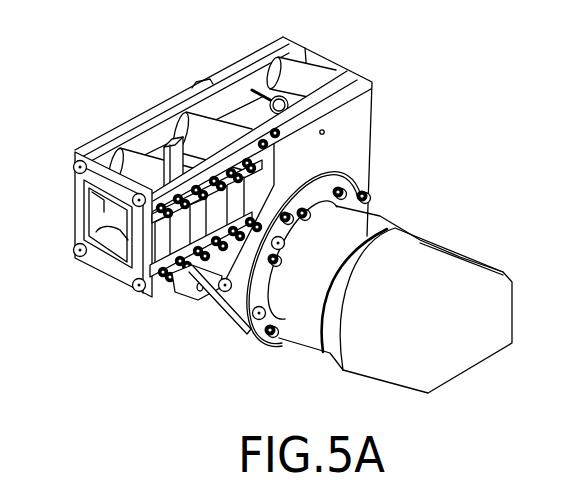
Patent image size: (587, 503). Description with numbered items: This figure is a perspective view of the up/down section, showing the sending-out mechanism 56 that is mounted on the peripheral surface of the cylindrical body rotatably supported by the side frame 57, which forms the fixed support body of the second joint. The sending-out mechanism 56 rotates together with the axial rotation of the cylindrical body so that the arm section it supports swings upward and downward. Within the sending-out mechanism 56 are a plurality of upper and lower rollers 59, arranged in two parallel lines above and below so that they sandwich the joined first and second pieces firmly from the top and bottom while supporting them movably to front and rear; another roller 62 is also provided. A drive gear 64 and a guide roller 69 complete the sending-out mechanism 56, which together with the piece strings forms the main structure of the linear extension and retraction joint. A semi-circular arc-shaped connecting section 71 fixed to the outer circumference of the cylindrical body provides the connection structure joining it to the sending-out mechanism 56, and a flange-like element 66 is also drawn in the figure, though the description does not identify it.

The sending-out mechanism 56 is at (388, 112).
The side frame 57 is at (456, 248).
The roller 59 is at (140, 147).
The roller 62 is at (137, 270).
The drive gear 64 is at (265, 97).
The flange 66 is at (378, 214).
The guide roller 69 is at (312, 62).
The connecting section 71 is at (250, 338).